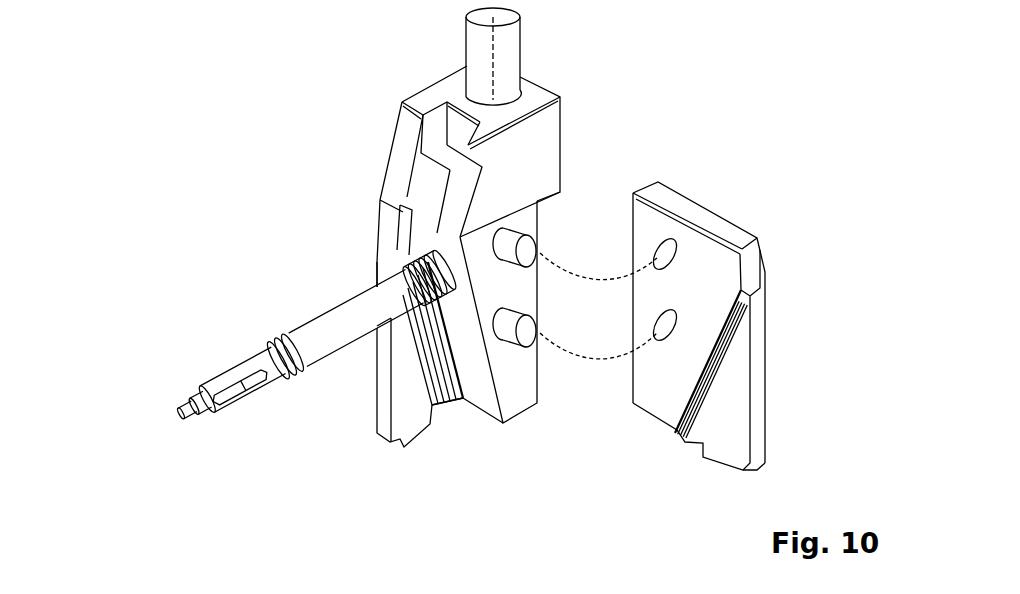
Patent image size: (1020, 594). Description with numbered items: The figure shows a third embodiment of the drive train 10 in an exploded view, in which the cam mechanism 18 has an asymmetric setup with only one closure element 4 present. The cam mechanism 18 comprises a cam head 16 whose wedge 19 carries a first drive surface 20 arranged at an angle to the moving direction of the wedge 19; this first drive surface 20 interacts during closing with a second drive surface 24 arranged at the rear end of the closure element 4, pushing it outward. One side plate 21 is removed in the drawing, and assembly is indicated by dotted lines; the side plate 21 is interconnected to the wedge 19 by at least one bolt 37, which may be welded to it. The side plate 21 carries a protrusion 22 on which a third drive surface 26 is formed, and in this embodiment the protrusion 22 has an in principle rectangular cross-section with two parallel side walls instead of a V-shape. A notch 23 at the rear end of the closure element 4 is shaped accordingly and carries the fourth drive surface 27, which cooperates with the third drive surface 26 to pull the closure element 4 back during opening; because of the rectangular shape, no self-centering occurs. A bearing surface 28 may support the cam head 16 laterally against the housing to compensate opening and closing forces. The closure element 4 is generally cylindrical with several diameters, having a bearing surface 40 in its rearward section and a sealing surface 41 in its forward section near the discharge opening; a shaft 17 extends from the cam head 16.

The closure element 4 is at (282, 376).
The device 10 is at (282, 376).
The cam head 16 is at (575, 137).
The shaft 17 is at (477, 58).
The cam mechanism 18 is at (553, 73).
The wedge 19 is at (517, 387).
The first drive surface 20 is at (609, 407).
The side plate 21 is at (373, 208).
The protrusion 22 is at (437, 390).
The notch 23 is at (410, 314).
The second drive surface 24 is at (400, 247).
The third drive surface 26 is at (407, 249).
The fourth drive surface 27 is at (416, 335).
The bearing surface 28 is at (407, 293).
The bolt 37 is at (558, 200).
The bearing surface 40 is at (192, 382).
The sealing surface 41 is at (175, 417).